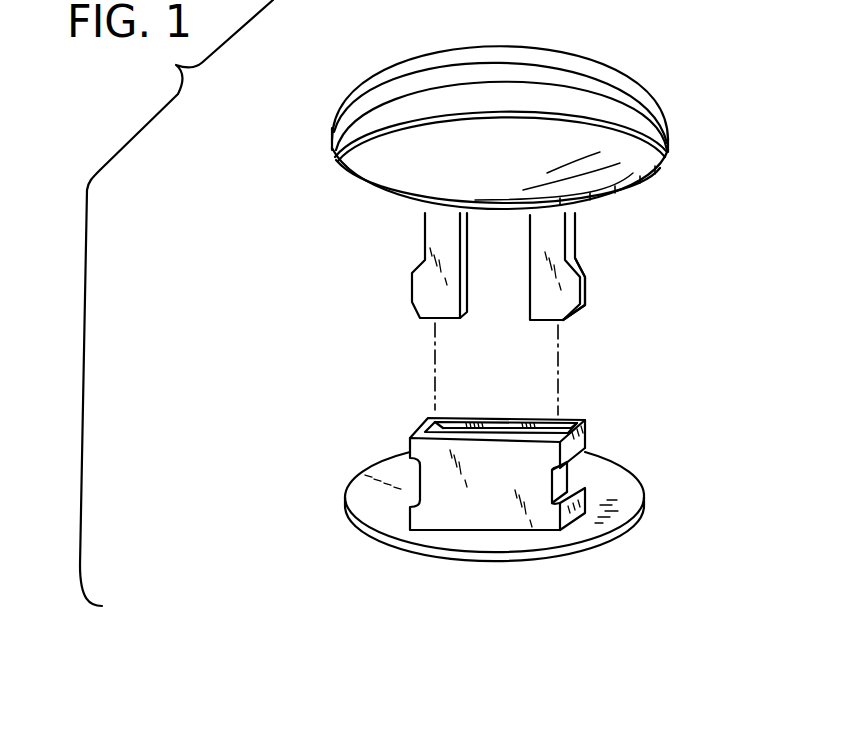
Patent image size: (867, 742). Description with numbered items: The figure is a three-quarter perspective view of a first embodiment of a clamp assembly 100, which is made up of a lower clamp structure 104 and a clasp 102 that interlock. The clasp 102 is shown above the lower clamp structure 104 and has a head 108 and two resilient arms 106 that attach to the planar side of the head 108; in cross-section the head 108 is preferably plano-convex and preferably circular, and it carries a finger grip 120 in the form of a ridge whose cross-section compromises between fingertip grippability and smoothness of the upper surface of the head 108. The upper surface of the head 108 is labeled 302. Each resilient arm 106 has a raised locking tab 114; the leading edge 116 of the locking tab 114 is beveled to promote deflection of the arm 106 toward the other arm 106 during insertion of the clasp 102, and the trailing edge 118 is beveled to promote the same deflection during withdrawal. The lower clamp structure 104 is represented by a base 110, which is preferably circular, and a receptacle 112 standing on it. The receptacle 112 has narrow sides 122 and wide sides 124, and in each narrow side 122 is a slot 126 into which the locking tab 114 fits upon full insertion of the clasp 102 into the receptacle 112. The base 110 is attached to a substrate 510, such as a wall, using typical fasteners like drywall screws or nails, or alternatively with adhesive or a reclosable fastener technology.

The clamp assembly 100 is at (290, 291).
The clasp 102 is at (680, 143).
The lower clamp structure 104 is at (325, 490).
The resilient arms 106 is at (427, 227).
The head 108 is at (628, 92).
The base 110 is at (607, 518).
The receptacle 112 is at (585, 435).
The locking tab 114 is at (584, 292).
The leading edge 116 is at (579, 308).
The trailing edge 118 is at (578, 267).
The finger grip 120 is at (377, 122).
The narrow sides 122 is at (580, 498).
The wide sides 124 is at (458, 502).
The slot 126 is at (580, 462).
The cap top surface 302 is at (556, 62).
The substrate 510 is at (522, 603).